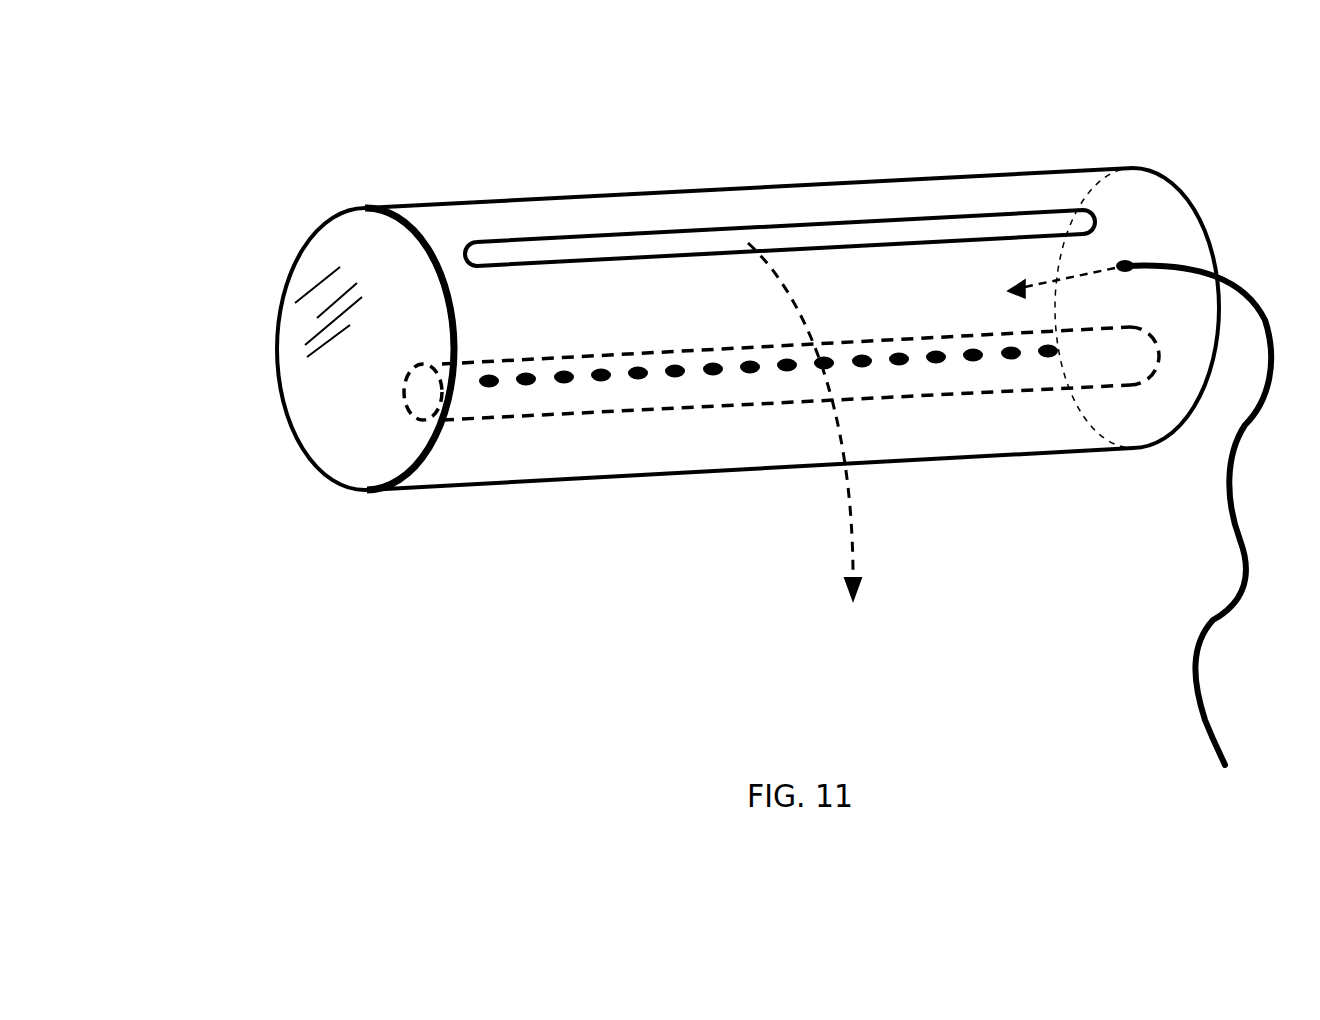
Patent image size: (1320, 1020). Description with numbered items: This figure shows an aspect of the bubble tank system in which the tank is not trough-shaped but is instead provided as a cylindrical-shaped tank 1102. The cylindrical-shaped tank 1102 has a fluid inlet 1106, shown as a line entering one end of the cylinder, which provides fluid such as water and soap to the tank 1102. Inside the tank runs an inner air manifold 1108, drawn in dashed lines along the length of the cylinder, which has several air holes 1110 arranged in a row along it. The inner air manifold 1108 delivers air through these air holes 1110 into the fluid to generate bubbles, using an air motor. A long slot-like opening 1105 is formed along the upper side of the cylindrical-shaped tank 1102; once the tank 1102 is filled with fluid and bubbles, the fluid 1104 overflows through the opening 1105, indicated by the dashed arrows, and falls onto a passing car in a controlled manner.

The cylindrical-shaped tank 1102 is at (465, 203).
The fluid 1104 is at (852, 512).
The opening 1105 is at (902, 230).
The fluid inlet 1106 is at (1194, 534).
The inner air manifold 1108 is at (493, 362).
The air holes 1110 is at (600, 375).